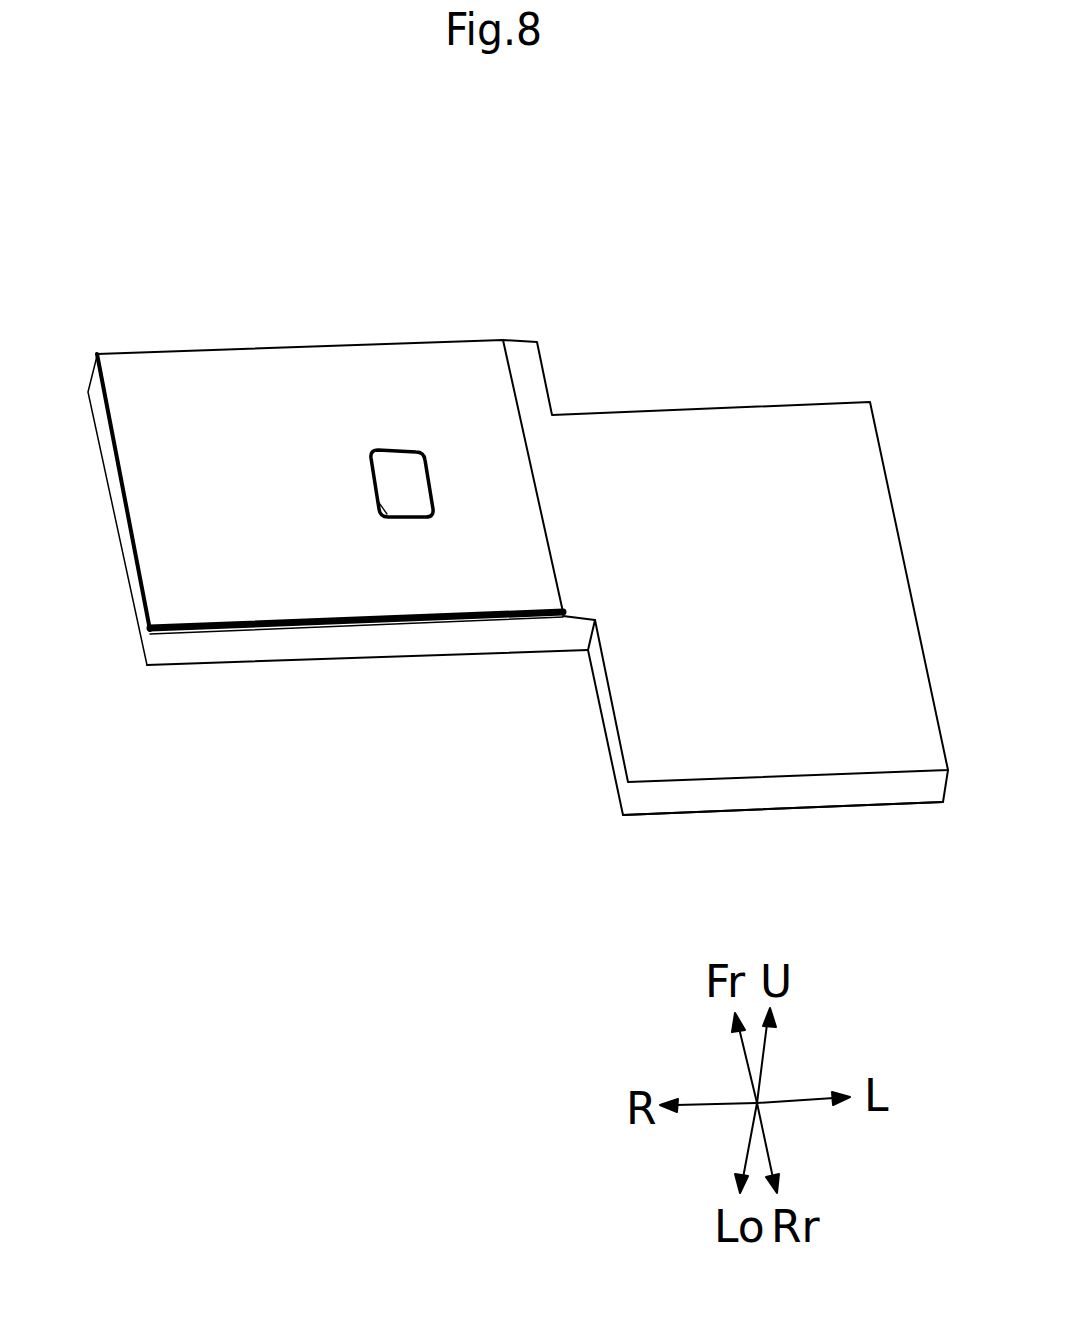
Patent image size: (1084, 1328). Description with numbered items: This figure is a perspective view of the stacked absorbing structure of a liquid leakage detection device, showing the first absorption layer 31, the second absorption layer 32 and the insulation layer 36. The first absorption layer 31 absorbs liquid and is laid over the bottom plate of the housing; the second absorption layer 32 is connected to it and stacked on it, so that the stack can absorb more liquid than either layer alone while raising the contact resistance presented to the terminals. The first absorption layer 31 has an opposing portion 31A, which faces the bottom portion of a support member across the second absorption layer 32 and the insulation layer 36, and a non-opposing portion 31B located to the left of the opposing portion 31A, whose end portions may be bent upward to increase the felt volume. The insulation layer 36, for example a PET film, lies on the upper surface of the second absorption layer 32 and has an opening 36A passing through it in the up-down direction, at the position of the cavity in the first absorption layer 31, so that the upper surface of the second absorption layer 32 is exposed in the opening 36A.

The first absorption layer 31 is at (663, 817).
The opposing portion 31A is at (147, 660).
The non-opposing portion 31B is at (733, 813).
The second absorption layer 32 is at (405, 470).
The insulation layer 36 is at (150, 630).
The opening 36A is at (389, 518).